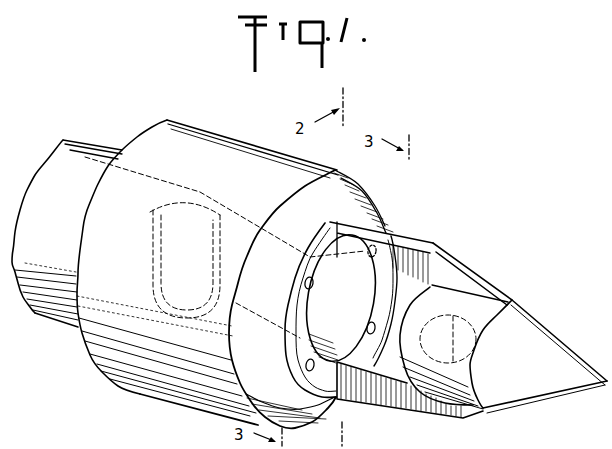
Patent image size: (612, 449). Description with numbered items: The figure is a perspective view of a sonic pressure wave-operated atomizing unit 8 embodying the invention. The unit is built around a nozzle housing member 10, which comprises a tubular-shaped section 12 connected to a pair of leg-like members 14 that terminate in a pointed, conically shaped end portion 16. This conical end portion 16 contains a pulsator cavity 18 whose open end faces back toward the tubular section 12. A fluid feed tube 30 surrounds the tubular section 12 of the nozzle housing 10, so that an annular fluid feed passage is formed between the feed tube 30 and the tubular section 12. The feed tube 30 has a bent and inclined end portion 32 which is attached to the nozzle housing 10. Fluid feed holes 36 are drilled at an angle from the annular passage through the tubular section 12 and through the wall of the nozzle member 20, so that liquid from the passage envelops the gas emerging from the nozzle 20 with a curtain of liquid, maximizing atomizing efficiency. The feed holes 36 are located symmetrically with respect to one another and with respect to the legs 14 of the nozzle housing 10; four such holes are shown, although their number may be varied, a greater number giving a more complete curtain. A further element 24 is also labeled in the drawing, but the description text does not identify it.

The atomizing unit 8 is at (427, 172).
The nozzle housing member 10 is at (474, 254).
The tubular-shaped section 12 is at (110, 147).
The leg-like members 14 is at (420, 238).
The pointed, conically shaped end portion 16 is at (557, 330).
The pulsator cavity 18 is at (453, 364).
The nozzle member 20 is at (189, 443).
The body element 24 is at (91, 443).
The fluid feed tube 30 is at (237, 140).
The bent and inclined end portion 32 is at (372, 208).
The fluid feed holes 36 is at (313, 283).